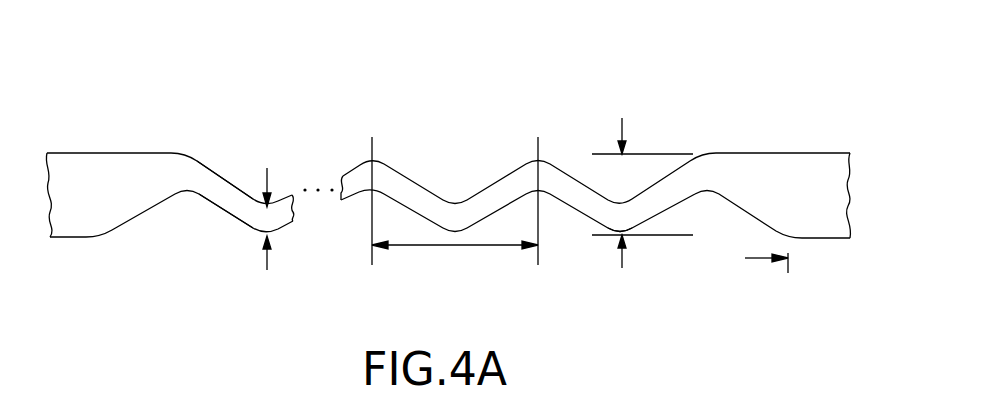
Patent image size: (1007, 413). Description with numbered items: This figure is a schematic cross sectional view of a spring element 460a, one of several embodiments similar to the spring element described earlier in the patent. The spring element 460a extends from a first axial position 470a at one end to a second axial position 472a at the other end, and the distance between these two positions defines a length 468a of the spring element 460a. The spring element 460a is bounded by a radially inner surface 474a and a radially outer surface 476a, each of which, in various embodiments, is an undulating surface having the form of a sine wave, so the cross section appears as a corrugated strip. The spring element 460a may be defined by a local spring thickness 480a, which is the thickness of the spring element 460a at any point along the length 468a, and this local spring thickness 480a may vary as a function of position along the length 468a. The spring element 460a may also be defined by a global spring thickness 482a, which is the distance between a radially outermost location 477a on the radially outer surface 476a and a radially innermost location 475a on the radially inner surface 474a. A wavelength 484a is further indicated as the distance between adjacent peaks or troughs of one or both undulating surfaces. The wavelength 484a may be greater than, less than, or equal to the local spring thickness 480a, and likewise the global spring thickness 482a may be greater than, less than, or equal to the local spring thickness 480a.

The spring element 460a is at (155, 124).
The first axial position 470a is at (72, 153).
The second axial position 472a is at (780, 153).
The radially inner surface 474a is at (223, 208).
The radially outer surface 476a is at (215, 168).
The local spring thickness 480a is at (272, 172).
The wavelength 484a is at (487, 246).
The radially innermost location 475a is at (612, 237).
The radially outermost location 477a is at (702, 152).
The global spring thickness 482a is at (622, 264).
The length 468a is at (755, 258).